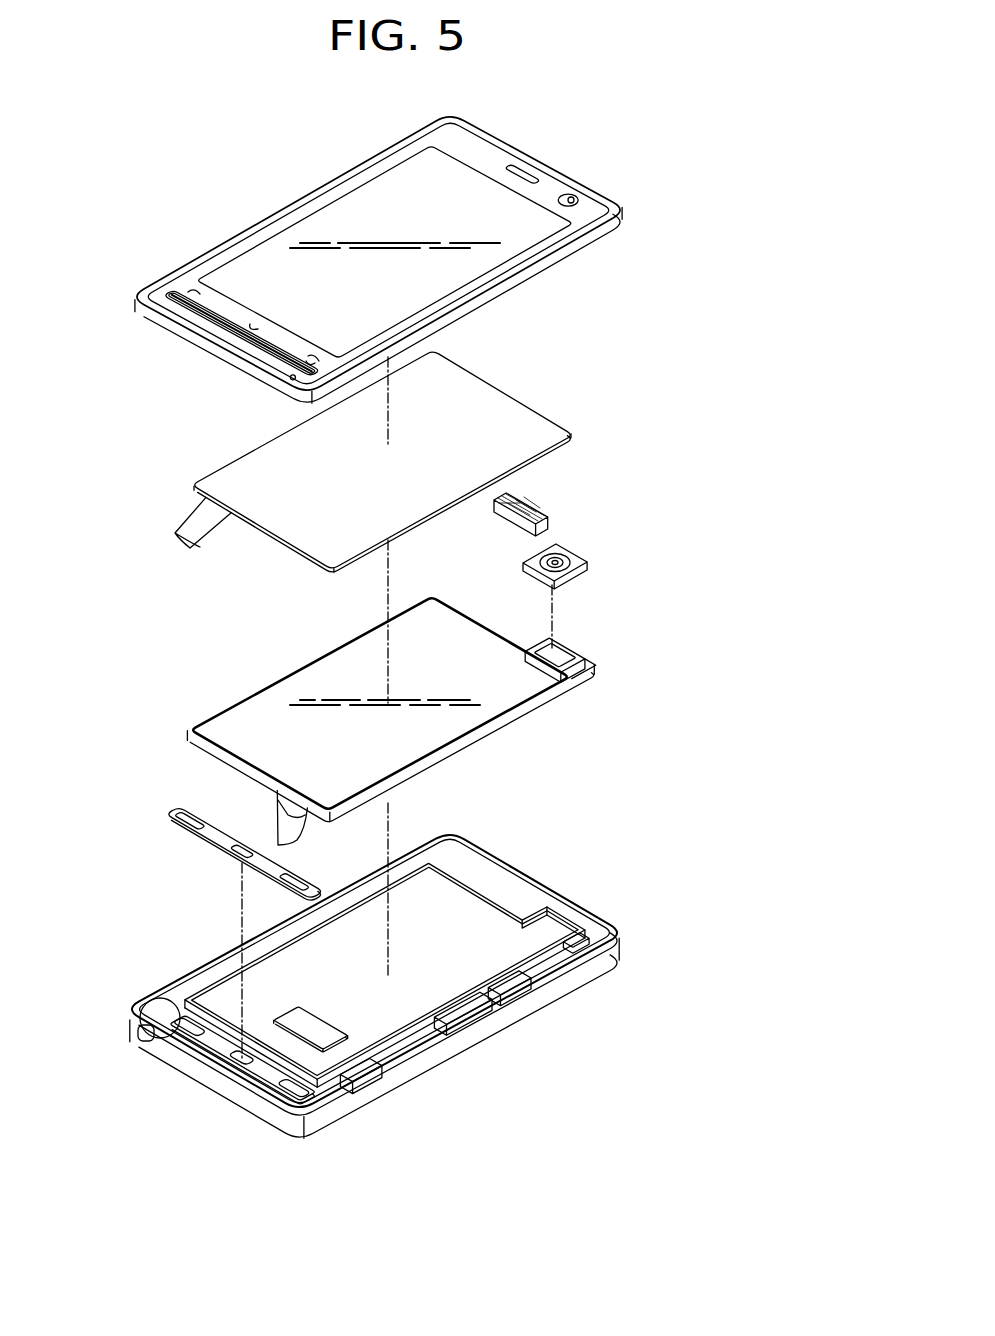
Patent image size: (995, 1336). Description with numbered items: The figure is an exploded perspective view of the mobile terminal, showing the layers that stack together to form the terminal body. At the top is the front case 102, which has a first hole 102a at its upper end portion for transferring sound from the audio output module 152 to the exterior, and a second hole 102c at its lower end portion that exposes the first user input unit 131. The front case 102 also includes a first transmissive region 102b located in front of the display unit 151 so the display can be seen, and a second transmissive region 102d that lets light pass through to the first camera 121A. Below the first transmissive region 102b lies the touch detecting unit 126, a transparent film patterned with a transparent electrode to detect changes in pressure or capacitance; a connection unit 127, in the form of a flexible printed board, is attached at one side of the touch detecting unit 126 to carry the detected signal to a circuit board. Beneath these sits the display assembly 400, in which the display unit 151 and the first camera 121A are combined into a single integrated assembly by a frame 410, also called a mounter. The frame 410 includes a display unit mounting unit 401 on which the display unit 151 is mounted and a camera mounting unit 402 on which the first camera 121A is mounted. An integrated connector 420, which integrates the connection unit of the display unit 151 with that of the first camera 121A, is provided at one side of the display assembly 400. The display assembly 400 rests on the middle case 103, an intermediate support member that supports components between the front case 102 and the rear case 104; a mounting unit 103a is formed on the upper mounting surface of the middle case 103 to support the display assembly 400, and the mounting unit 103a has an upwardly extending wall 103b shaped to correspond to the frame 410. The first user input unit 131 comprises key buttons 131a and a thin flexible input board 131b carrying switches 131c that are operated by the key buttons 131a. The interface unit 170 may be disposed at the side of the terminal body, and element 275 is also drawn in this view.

The front case 102 is at (627, 210).
The first hole 102a is at (527, 172).
The first transmissive region 102b is at (403, 165).
The second hole 102c is at (232, 325).
The second transmissive region 102d is at (577, 198).
The touch detecting unit 126 is at (494, 396).
The connection unit 127 is at (200, 523).
The audio output module 152 is at (527, 507).
The first camera 121A is at (562, 560).
The display assembly 400 is at (417, 721).
The display unit 151 is at (339, 662).
The frame 410 is at (442, 730).
The display unit mounting unit 401 is at (527, 713).
The camera mounting unit 402 is at (570, 676).
The integrated connector 420 is at (270, 816).
The middle case 103 is at (395, 967).
The mounting unit 103a is at (455, 910).
The upwardly extending wall 103b is at (448, 867).
The rear case 104 is at (560, 994).
The interface unit 170 is at (376, 1082).
The contact terminals 275 is at (512, 1008).
The first user input unit 131 is at (176, 956).
The key buttons 131a is at (250, 853).
The input board 131b is at (177, 1002).
The switches 131c is at (124, 1036).